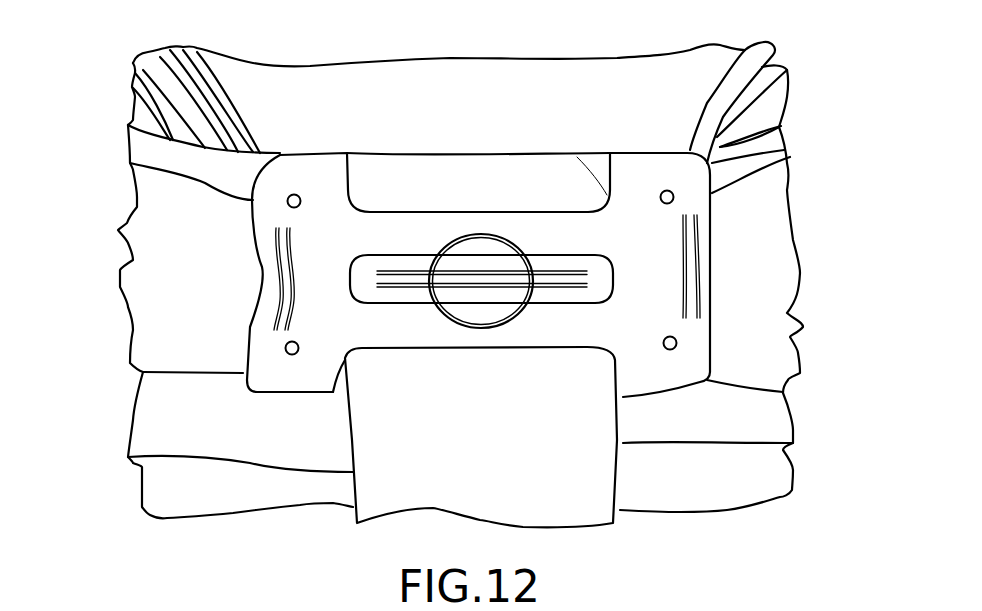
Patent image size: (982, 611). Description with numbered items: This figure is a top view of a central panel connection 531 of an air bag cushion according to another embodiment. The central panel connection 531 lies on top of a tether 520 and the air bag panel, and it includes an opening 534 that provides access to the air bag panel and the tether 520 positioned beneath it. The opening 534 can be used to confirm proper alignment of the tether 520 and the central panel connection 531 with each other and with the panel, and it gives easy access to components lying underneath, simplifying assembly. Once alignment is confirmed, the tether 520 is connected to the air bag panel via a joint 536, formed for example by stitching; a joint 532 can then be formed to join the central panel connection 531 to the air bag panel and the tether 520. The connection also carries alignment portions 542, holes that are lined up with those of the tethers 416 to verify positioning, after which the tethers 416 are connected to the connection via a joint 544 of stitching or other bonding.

The tether 416 is at (163, 235).
The tether 520 is at (563, 500).
The central panel connection 531 is at (642, 168).
The joint 532 is at (493, 237).
The opening 534 is at (376, 258).
The joint 536 is at (553, 287).
The alignment portions 542 is at (287, 201).
The joint 544 is at (270, 280).